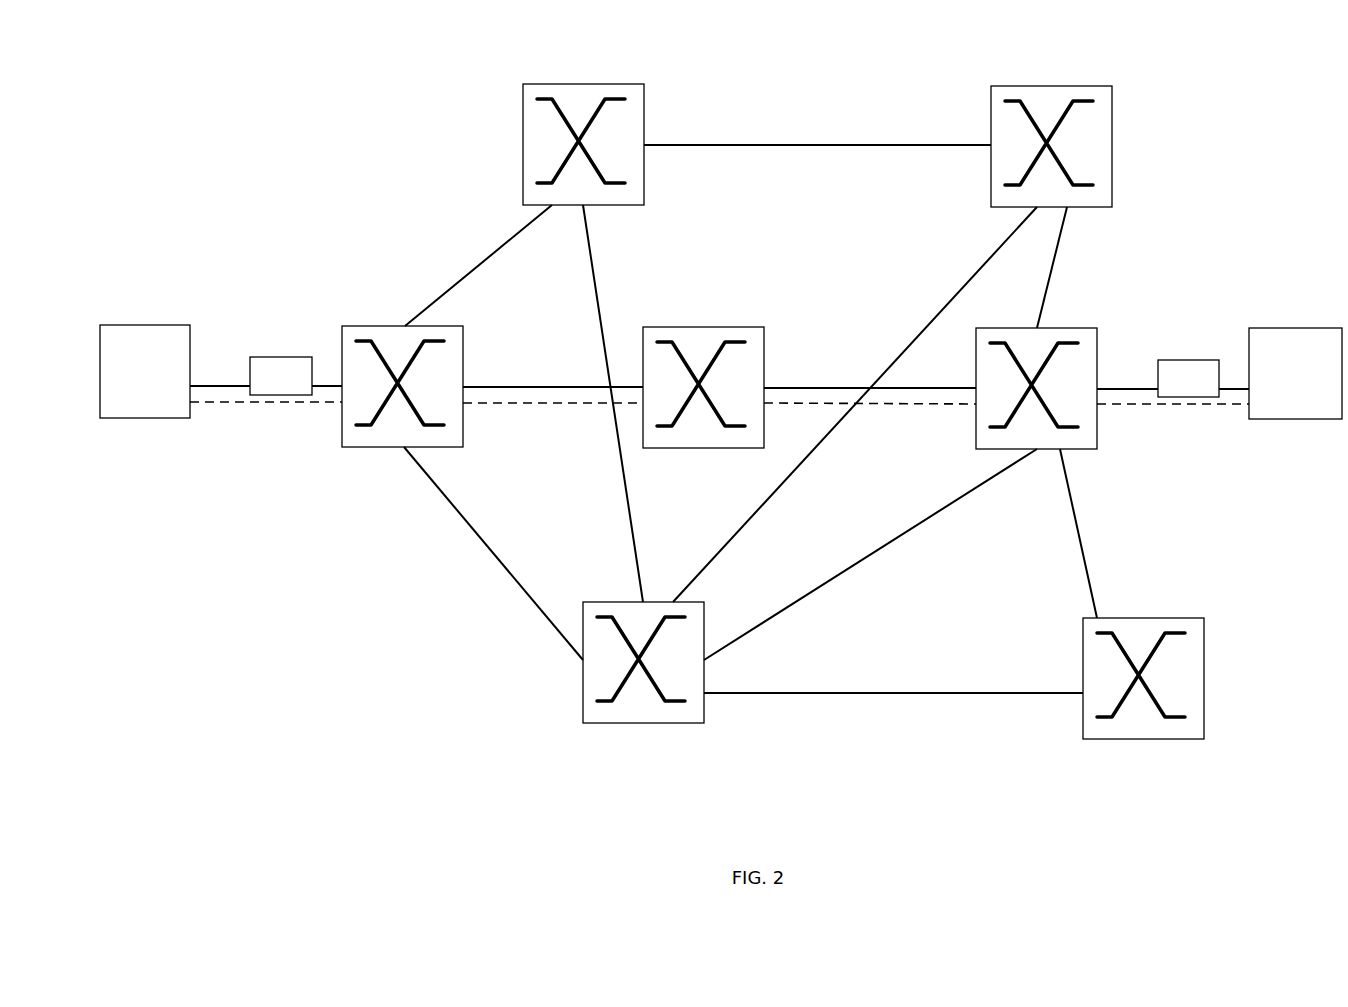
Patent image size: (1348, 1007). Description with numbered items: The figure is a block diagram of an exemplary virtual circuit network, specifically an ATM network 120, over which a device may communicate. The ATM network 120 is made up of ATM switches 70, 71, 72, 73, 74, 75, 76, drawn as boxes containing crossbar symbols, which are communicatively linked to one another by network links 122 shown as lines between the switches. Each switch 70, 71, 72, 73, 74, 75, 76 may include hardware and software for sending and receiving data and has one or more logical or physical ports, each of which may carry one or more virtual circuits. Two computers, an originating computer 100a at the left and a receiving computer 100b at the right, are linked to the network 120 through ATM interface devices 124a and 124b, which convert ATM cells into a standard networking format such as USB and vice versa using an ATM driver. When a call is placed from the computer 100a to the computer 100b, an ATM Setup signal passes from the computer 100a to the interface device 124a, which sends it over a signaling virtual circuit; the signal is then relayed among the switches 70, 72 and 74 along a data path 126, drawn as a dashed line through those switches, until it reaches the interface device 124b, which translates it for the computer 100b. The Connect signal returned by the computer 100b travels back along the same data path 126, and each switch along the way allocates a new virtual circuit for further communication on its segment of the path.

The ATM network 120 is at (380, 561).
The originating computer 100a is at (130, 325).
The receiving computer 100b is at (1278, 328).
The ATM interface device 124a is at (265, 395).
The ATM interface device 124b is at (1190, 397).
The ATM switch 70 is at (358, 326).
The ATM switch 71 is at (552, 84).
The ATM switch 72 is at (673, 327).
The ATM switch 73 is at (1020, 86).
The ATM switch 74 is at (1067, 450).
The ATM switch 75 is at (598, 723).
The ATM switch 76 is at (1137, 739).
The network link 122 is at (735, 145).
The data path 126 is at (914, 404).